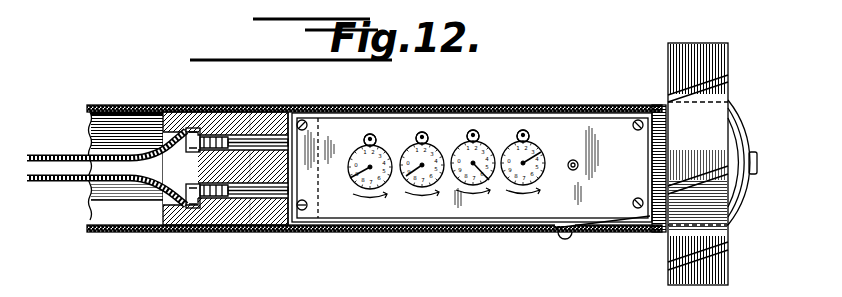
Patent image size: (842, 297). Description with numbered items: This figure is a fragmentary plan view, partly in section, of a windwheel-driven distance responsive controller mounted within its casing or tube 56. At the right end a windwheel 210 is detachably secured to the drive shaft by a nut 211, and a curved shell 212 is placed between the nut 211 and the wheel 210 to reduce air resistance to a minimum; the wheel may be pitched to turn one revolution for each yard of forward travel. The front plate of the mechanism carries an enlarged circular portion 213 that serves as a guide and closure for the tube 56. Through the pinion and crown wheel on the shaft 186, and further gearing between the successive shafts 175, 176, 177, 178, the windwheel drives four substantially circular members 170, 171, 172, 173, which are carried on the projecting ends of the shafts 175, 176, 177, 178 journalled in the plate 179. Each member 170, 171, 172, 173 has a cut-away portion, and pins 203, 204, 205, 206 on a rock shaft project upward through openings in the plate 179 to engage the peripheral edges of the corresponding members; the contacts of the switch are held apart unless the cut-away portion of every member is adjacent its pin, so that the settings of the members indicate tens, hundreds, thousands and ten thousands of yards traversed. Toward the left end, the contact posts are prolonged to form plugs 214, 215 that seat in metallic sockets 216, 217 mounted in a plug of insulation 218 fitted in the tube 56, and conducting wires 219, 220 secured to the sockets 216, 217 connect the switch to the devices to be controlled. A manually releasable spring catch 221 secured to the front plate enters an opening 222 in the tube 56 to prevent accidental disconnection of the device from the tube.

The windwheel-driven distance responsive switch 56 is at (368, 106).
The member 170 is at (537, 150).
The member 171 is at (483, 151).
The member 172 is at (427, 151).
The member 173 is at (362, 152).
The shaft 175 is at (543, 156).
The shaft 176 is at (492, 182).
The shaft 177 is at (408, 180).
The shaft 178 is at (352, 181).
The plate 179 is at (472, 167).
The shaft 186 is at (579, 165).
The pin 203 is at (522, 130).
The pin 204 is at (473, 130).
The pin 205 is at (422, 132).
The pin 206 is at (375, 137).
The windwheel 210 is at (728, 50).
The nut 211 is at (758, 152).
The curved shell 212 is at (746, 205).
The enlarged circular portion 213 is at (660, 115).
The plug 214 is at (268, 142).
The plug 215 is at (272, 199).
The metallic socket 216 is at (226, 139).
The metallic socket 217 is at (225, 199).
The plug of insulation 218 is at (178, 114).
The conducting wire 219 is at (50, 155).
The conducting wire 220 is at (58, 183).
The manually releasable spring catch 221 is at (593, 229).
The opening 222 is at (564, 236).